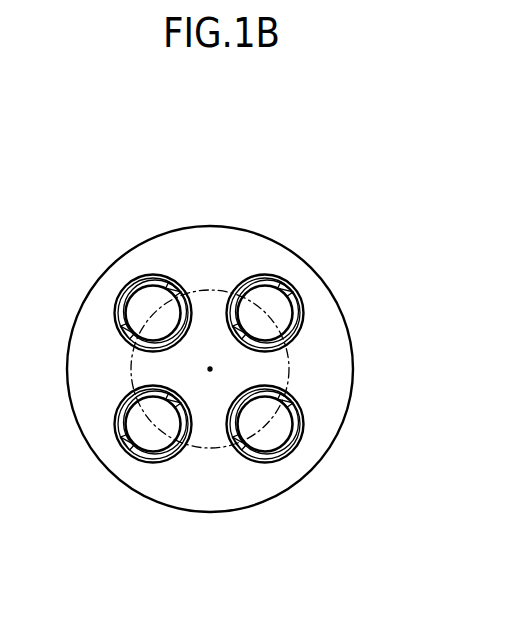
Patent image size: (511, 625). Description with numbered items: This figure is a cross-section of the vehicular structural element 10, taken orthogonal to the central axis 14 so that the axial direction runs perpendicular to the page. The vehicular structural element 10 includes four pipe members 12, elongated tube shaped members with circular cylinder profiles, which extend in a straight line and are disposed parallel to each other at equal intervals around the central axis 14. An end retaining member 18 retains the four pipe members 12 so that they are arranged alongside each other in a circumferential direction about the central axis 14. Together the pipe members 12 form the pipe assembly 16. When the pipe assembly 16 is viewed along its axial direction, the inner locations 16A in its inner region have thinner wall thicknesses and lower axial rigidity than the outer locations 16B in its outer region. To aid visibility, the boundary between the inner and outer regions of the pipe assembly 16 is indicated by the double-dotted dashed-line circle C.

The vehicular structural element 10 is at (392, 260).
The pipe members 12 is at (131, 281).
The central axis 14 is at (211, 369).
The pipe assembly 16 is at (305, 281).
The inner locations 16A is at (230, 302).
The outer locations 16B is at (157, 282).
The end retaining members 18 is at (180, 228).
The double-dotted dashed-line circle C is at (288, 383).